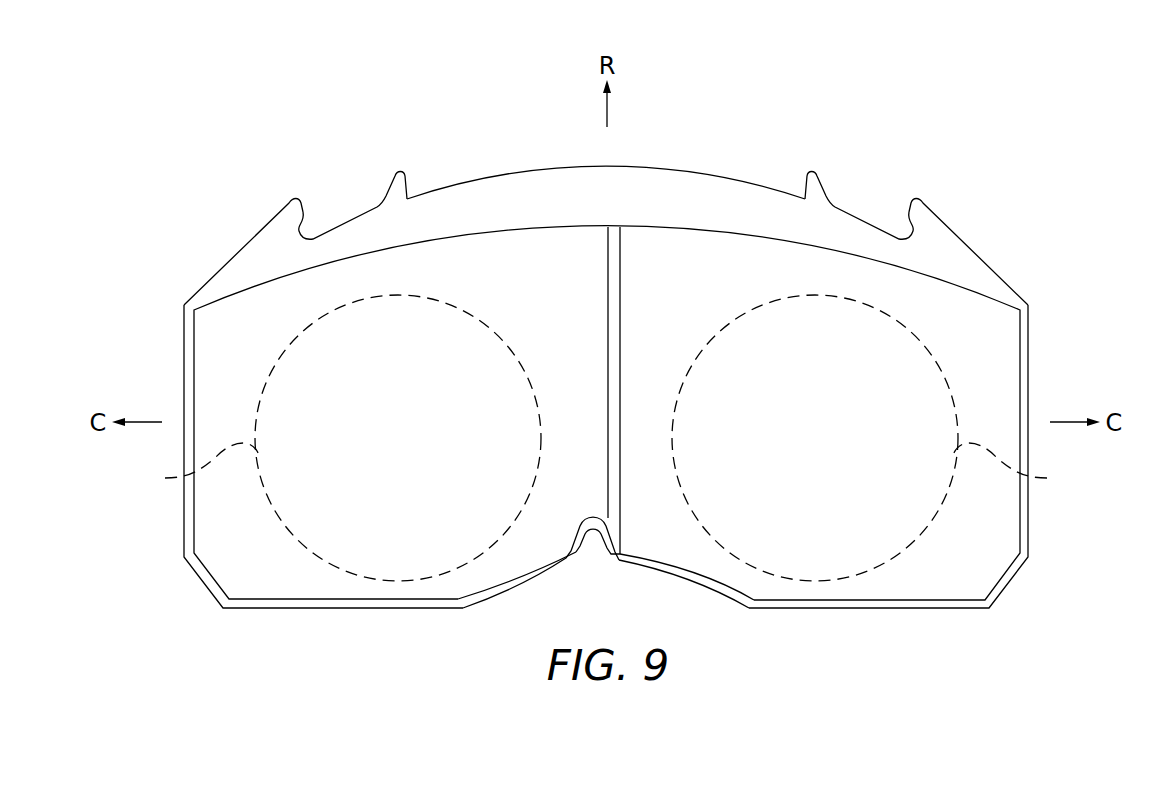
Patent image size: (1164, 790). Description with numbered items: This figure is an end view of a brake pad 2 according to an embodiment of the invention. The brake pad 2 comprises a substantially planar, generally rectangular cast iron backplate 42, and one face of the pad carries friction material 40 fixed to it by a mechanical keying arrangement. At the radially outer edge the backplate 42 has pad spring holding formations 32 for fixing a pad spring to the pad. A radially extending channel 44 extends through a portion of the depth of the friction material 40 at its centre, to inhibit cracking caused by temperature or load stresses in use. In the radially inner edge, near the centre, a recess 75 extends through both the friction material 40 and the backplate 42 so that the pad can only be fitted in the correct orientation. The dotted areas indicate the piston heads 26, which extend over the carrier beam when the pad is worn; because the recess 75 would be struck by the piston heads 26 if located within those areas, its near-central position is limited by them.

The brake pad 2 is at (747, 102).
The piston head 26 is at (606, 466).
The pad spring holding formations 32 is at (337, 178).
The friction material 40 is at (993, 316).
The backplate 42 is at (927, 212).
The radially extending channel 44 is at (613, 229).
The recess 75 is at (576, 556).